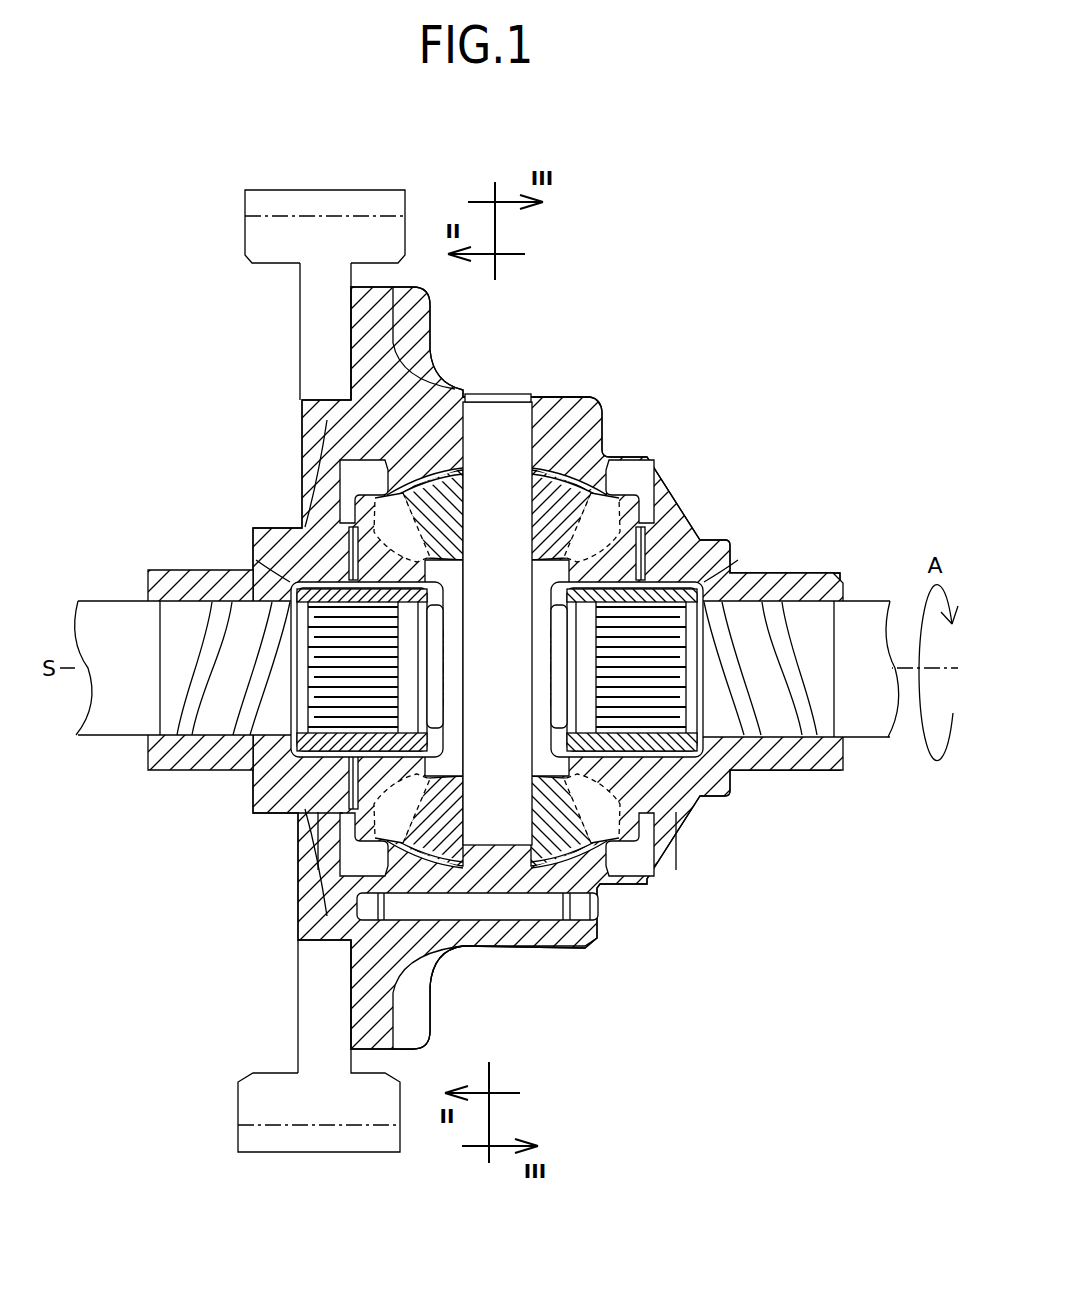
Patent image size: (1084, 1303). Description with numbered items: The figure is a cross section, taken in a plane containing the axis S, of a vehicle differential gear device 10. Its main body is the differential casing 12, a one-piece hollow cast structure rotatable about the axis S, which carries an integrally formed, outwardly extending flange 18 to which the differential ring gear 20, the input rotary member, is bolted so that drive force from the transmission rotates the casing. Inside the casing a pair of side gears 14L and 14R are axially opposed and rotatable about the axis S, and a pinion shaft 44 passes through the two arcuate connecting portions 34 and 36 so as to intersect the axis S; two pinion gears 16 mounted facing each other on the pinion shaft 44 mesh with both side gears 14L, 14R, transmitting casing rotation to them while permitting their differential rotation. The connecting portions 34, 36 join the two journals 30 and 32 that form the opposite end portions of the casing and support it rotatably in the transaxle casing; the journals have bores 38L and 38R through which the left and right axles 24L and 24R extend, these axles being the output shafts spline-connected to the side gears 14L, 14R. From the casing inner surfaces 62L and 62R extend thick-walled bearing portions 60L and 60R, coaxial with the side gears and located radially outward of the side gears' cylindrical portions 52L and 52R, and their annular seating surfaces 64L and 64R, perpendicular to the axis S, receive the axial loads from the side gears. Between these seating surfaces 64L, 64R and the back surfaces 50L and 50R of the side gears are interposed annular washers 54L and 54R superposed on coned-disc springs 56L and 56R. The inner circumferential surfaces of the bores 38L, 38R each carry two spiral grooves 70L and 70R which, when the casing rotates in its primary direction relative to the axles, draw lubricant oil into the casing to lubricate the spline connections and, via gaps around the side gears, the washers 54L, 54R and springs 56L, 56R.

The differential gear device 10 is at (754, 304).
The differential casing 12 is at (675, 908).
The left side gear 14L is at (362, 481).
The right side gear 14R is at (617, 485).
The pinion gears 16 is at (440, 480).
The flange 18 is at (370, 328).
The differential ring gear 20 is at (313, 237).
The left axle 24L is at (114, 707).
The right axle 24R is at (868, 720).
The journal 30 is at (179, 578).
The journal 32 is at (810, 583).
The connecting portion 34 is at (563, 420).
The connecting portion 36 is at (548, 933).
The bore 38L is at (186, 728).
The bore 38R is at (797, 733).
The pinion shaft 44 is at (498, 428).
The back surface 50L is at (292, 760).
The back surface 50R is at (645, 783).
The cylindrical portion 52L is at (320, 582).
The cylindrical portion 52R is at (673, 572).
The annular washer 54L is at (310, 815).
The annular washer 54R is at (612, 853).
The coned-disc spring 56L is at (330, 810).
The coned-disc spring 56R is at (672, 805).
The bearing portion 60L is at (330, 553).
The bearing portion 60R is at (667, 550).
The inner surface 62L is at (340, 858).
The inner surface 62R is at (657, 864).
The annular seating surface 64L is at (343, 493).
The annular seating surface 64R is at (651, 492).
The spiral grooves 70L is at (203, 643).
The spiral grooves 70R is at (797, 653).